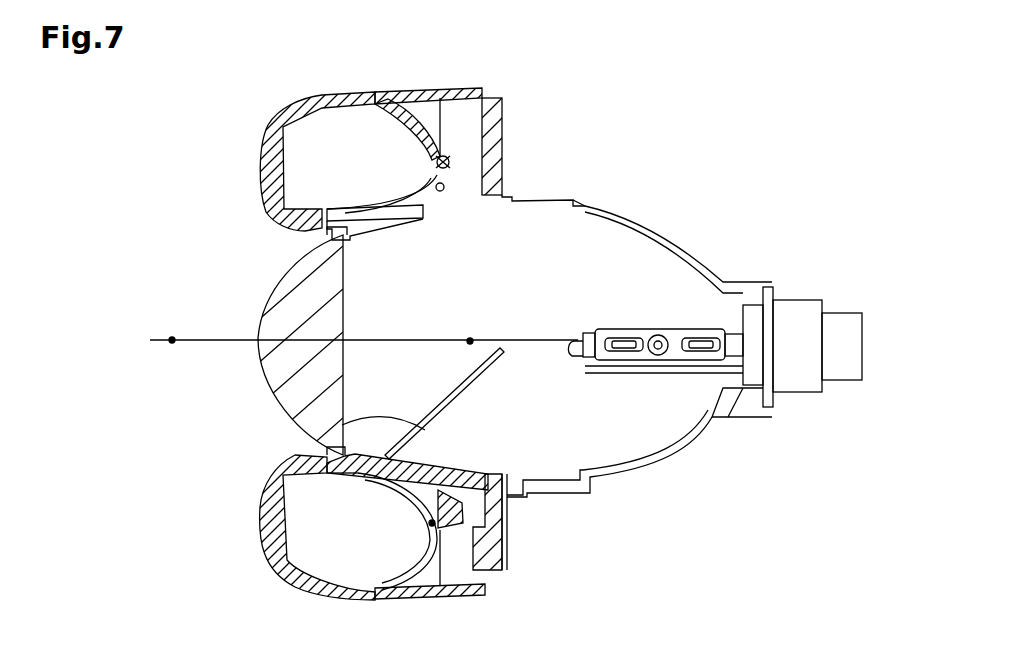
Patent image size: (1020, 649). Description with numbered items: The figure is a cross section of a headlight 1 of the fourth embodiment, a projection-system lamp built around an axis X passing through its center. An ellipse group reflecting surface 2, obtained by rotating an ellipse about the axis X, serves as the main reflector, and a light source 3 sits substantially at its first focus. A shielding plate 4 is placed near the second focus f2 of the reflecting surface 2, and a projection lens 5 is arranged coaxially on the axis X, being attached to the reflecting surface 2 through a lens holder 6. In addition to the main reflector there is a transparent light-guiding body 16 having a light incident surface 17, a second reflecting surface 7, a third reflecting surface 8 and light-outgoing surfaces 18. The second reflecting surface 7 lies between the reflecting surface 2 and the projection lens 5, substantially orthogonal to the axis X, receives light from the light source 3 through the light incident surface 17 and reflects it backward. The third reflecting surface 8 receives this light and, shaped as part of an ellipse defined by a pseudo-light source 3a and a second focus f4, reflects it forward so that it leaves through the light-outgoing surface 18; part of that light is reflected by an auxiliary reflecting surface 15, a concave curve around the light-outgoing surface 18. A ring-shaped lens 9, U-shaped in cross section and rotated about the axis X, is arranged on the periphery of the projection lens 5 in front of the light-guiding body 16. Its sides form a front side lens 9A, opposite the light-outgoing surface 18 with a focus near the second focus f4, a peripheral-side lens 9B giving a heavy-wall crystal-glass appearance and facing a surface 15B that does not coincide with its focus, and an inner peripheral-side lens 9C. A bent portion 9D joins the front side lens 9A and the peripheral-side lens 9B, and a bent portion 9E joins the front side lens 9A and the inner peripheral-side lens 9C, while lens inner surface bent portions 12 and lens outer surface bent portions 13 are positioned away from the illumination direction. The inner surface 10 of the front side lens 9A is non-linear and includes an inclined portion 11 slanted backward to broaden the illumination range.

The headlight 1 is at (733, 138).
The ellipse group reflecting surface 2 is at (633, 468).
The light source 3 is at (660, 350).
The pseudo-light source 3a is at (172, 342).
The shielding plate 4 is at (310, 430).
The projection lens 5 is at (300, 292).
The lens holder 6 is at (520, 490).
The second reflecting surface 7 is at (437, 180).
The third reflecting surface 8 is at (500, 137).
The ring-shaped lens 9 is at (283, 113).
The front side lens 9A is at (265, 165).
The peripheral-side lens 9B is at (327, 95).
The inner peripheral-side lens 9C is at (293, 220).
The bent portion 9D is at (265, 553).
The bent portion 9E is at (267, 493).
The inner surface 10 is at (285, 170).
The inclined portion 11 is at (280, 145).
The lens inner surface bent portion 12 is at (287, 477).
The lens outer surface bent portion 13 is at (280, 463).
The auxiliary reflecting surface 15 is at (395, 100).
The surface facing the peripheral-side lens 15B is at (440, 468).
The light-guiding body 16 is at (453, 160).
The light incident surface 17 is at (450, 178).
The light-outgoing surface 18 is at (427, 160).
The axis X is at (351, 341).
The second focus f2 is at (470, 340).
The second focus f4 is at (455, 160).